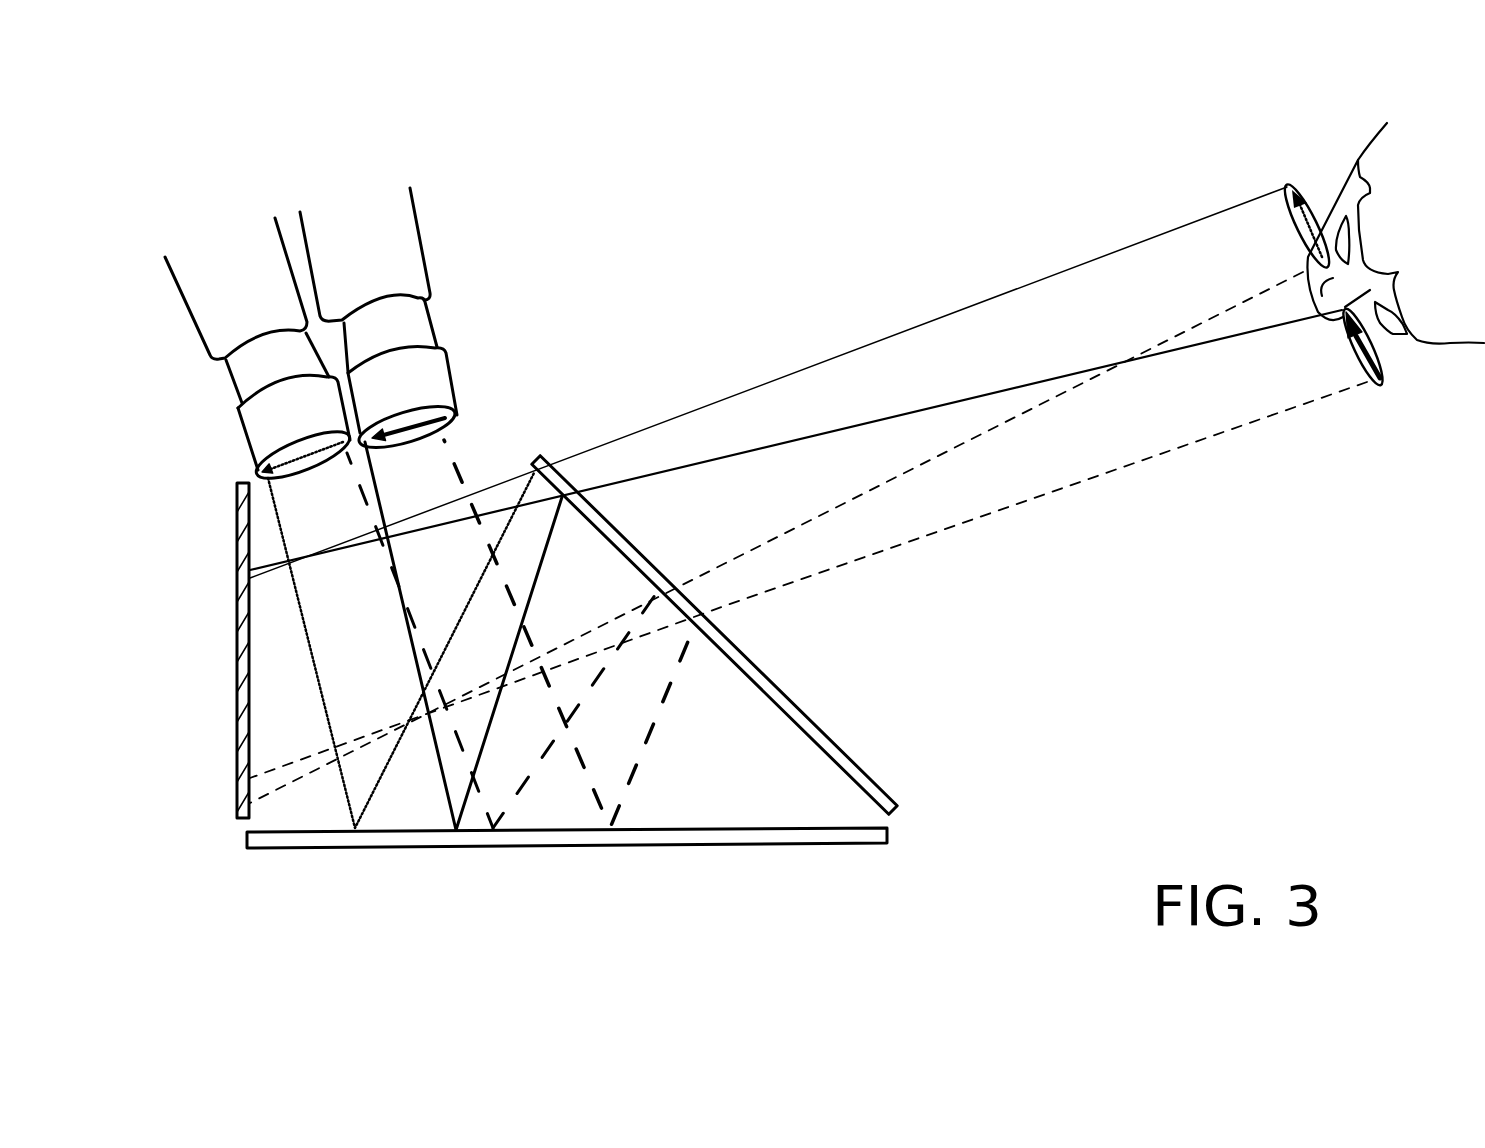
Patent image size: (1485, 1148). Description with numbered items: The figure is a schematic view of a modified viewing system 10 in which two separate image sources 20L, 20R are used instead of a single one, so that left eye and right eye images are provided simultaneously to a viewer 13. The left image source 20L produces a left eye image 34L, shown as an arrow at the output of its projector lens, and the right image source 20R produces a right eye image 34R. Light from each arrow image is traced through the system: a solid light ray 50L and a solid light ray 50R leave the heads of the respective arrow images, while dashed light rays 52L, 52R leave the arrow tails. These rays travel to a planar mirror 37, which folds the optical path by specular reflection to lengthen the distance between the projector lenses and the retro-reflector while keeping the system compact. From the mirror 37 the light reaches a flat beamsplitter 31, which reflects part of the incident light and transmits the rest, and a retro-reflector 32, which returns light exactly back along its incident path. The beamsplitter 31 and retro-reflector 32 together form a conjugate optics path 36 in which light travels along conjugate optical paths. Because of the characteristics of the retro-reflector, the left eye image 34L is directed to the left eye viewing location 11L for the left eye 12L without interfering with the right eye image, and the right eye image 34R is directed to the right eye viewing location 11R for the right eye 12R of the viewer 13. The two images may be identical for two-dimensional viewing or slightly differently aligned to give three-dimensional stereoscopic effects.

The viewing system 10 is at (773, 347).
The right eye image source 20R is at (218, 222).
The left eye image source 20L is at (437, 231).
The right eye image 34R is at (310, 440).
The left eye image 34L is at (423, 412).
The conjugate optics path 36 is at (884, 760).
The beamsplitter 31 is at (790, 700).
The retro-reflector 32 is at (235, 650).
The mirror 37 is at (743, 846).
The right eye light ray 50R is at (303, 630).
The left eye light ray 50L is at (410, 665).
The right eye dashed light ray 52R is at (480, 832).
The left eye dashed light ray 52L is at (550, 648).
The viewer 13 is at (1408, 172).
The right eye viewing location 11R is at (1287, 185).
The left eye viewing location 11L is at (1378, 387).
The right eye 12R is at (1338, 220).
The left eye 12L is at (1400, 337).